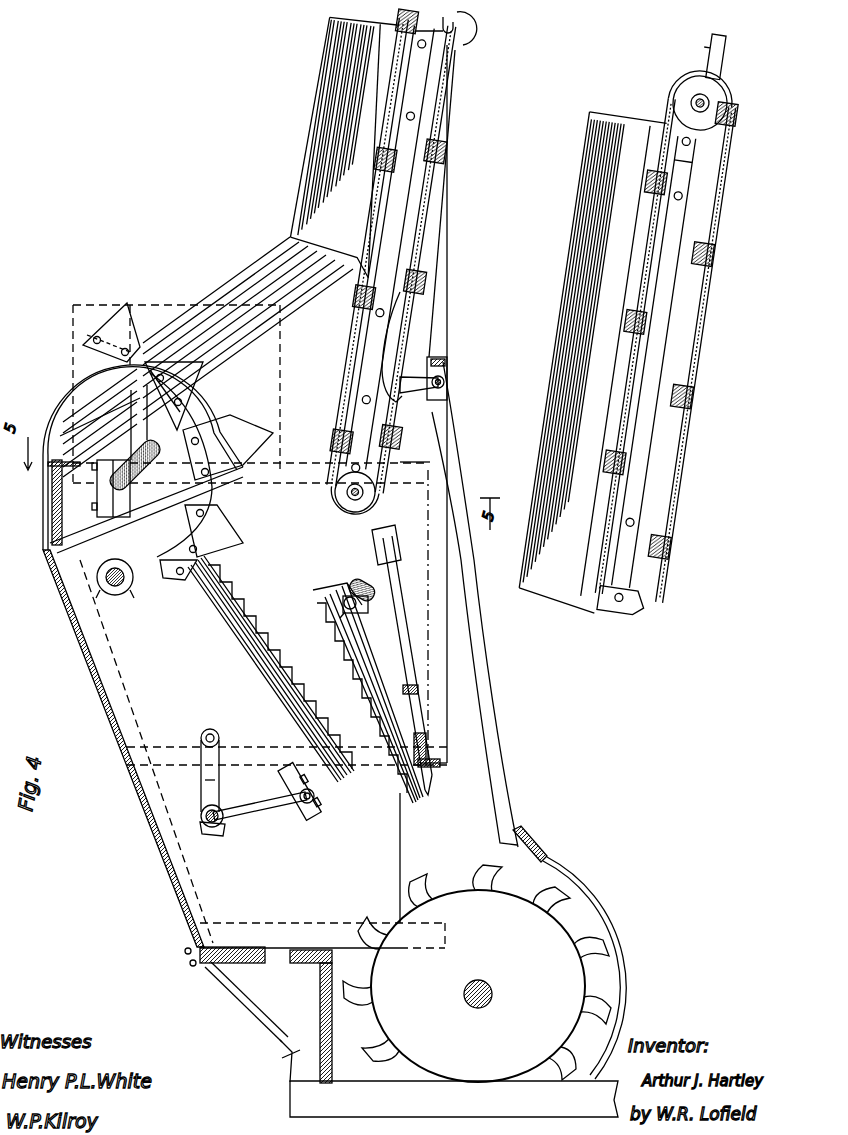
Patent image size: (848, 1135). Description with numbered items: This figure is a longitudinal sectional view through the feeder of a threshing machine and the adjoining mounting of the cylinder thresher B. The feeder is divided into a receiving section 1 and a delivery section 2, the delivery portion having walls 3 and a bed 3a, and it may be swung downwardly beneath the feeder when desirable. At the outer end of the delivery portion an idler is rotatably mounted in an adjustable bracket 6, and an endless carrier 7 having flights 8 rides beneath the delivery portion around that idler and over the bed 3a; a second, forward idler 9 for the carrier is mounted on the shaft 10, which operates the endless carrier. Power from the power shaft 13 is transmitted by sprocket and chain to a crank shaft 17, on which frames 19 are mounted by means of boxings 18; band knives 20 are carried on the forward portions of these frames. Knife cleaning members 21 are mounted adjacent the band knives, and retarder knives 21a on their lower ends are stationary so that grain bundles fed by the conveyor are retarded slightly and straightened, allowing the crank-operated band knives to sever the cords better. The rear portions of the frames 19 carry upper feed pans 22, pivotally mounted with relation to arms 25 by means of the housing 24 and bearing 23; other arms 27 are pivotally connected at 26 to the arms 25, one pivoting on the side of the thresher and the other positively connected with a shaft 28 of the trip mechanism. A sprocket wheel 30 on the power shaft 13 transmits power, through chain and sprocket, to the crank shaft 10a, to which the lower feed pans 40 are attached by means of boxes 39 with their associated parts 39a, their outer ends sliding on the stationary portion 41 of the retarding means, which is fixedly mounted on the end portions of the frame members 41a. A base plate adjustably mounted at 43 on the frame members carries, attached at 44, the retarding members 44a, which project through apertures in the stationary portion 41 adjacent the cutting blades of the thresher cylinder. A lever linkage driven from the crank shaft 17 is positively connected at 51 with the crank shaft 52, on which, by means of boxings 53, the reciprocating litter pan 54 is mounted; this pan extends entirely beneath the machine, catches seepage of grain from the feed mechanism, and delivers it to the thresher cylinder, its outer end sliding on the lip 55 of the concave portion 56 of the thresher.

The receiving section 1 is at (242, 284).
The delivery section 2 is at (322, 141).
The walls 3 is at (564, 358).
The bed 3a is at (618, 623).
The adjustable bracket 6 is at (693, 80).
The conveyor frame 7 is at (431, 262).
The flights 8 is at (435, 241).
The forward idler 9 is at (356, 470).
The shaft 10 is at (419, 491).
The crank shaft 10a is at (358, 583).
The power shaft 13 is at (122, 596).
The crank shaft 17 is at (110, 458).
The boxings 18 is at (97, 463).
The frames 19 is at (140, 403).
The band knives 20 is at (118, 306).
The knife cleaning members 21 is at (204, 400).
The retarder knives 21a is at (237, 392).
The upper feed pans 22 is at (245, 628).
The bearing 23 is at (284, 770).
The housing 24 is at (311, 806).
The arms 25 is at (266, 826).
The pivotal connection 26 is at (202, 830).
The arms 27 is at (206, 786).
The shaft 28 is at (206, 731).
The sprocket wheel 30 is at (443, 22).
The boxes 39 is at (362, 604).
The roller bracket 39a is at (350, 612).
The lower feed pans 40 is at (345, 672).
The stationary portion 41 is at (418, 698).
The frame members 41a is at (400, 580).
The adjustable mounting 43 is at (404, 688).
The attachment 44 is at (430, 770).
The retarding members 44a is at (428, 770).
The positive connection 51 is at (446, 383).
The crank shaft 52 is at (400, 383).
The boxings 53 is at (449, 364).
The litter pan 54 is at (492, 672).
The lip 55 is at (530, 836).
The concave portion 56 is at (596, 900).
The mounting of the cylinder thresher B is at (477, 973).